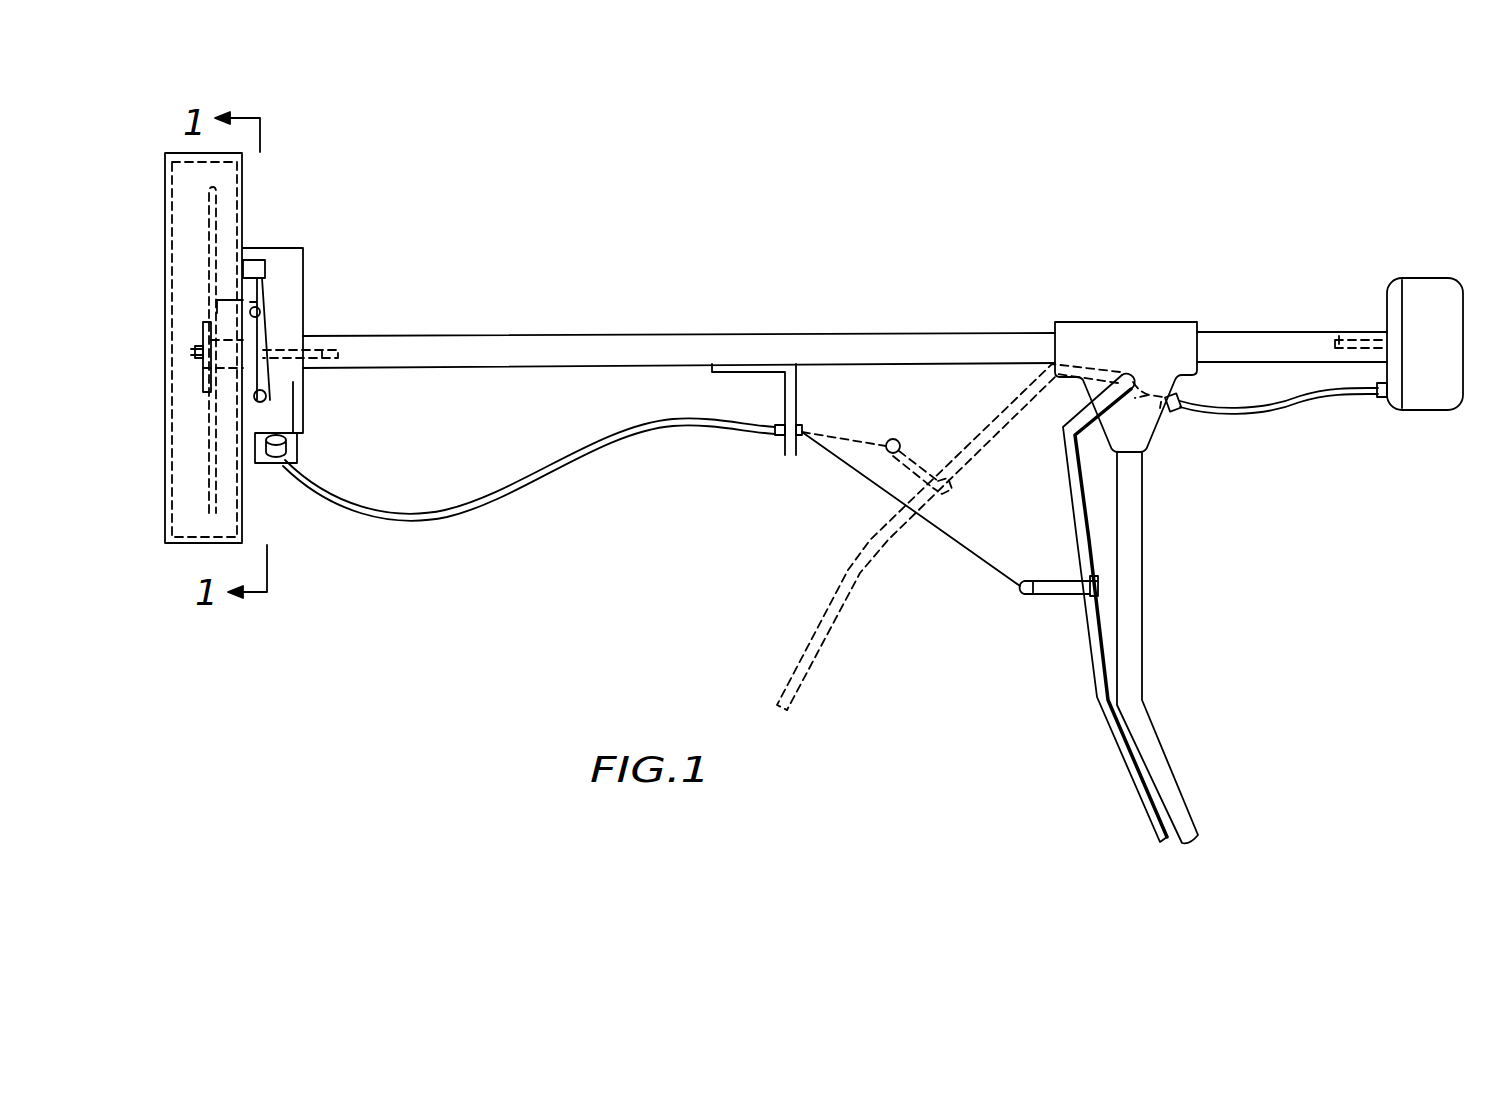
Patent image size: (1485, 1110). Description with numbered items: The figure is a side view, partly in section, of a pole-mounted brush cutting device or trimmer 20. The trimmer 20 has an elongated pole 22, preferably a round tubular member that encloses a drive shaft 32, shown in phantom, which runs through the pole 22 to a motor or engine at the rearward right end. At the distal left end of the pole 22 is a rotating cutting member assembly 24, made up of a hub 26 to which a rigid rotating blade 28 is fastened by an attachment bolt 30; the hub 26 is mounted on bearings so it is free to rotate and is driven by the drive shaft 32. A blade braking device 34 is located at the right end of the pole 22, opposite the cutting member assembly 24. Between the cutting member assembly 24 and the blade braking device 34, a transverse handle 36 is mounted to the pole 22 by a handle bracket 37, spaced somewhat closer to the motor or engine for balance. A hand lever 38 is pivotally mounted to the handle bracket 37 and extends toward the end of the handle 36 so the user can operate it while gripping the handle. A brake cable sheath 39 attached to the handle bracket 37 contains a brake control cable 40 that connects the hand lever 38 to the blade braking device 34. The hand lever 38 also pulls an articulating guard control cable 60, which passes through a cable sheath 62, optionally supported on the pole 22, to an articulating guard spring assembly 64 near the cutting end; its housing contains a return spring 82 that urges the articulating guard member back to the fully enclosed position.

The trimmer 20 is at (893, 245).
The elongated pole 22 is at (882, 348).
The rotating cutting member assembly 24 is at (253, 185).
The hub 26 is at (205, 305).
The rotating blade 28 is at (222, 233).
The attachment bolt 30 is at (198, 365).
The drive shaft 32 is at (322, 360).
The blade braking device 34 is at (1423, 287).
The handle 36 is at (1143, 740).
The handle bracket 37 is at (1150, 330).
The hand lever 38 is at (1093, 700).
The brake cable sheath 39 is at (1278, 407).
The brake control cable 40 is at (1140, 400).
The articulating guard control cable 60 is at (848, 436).
The cable sheath 62 is at (500, 500).
The articulating guard spring assembly 64 is at (317, 288).
The return spring 82 is at (263, 347).